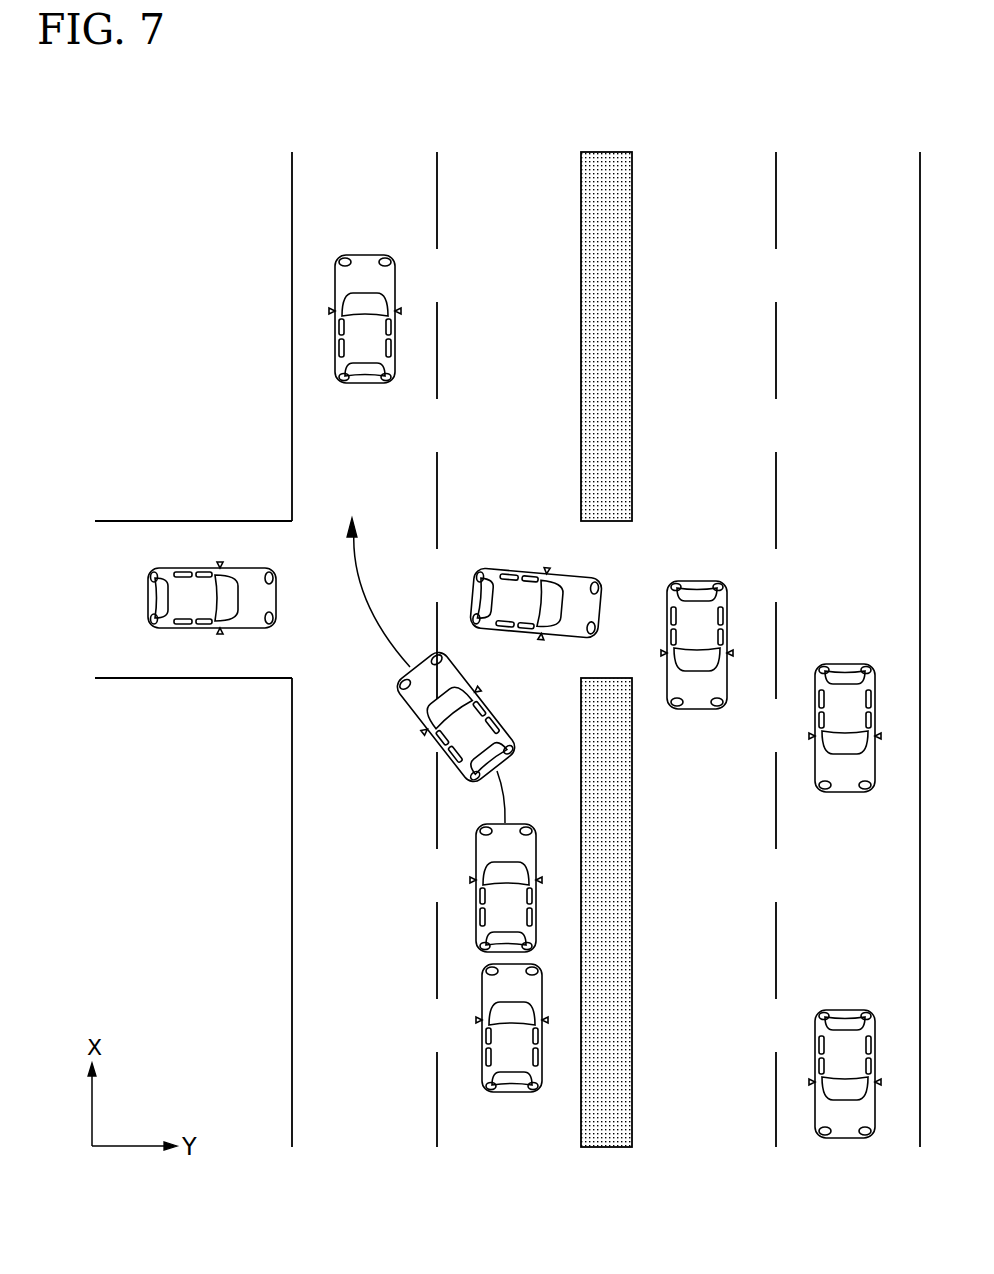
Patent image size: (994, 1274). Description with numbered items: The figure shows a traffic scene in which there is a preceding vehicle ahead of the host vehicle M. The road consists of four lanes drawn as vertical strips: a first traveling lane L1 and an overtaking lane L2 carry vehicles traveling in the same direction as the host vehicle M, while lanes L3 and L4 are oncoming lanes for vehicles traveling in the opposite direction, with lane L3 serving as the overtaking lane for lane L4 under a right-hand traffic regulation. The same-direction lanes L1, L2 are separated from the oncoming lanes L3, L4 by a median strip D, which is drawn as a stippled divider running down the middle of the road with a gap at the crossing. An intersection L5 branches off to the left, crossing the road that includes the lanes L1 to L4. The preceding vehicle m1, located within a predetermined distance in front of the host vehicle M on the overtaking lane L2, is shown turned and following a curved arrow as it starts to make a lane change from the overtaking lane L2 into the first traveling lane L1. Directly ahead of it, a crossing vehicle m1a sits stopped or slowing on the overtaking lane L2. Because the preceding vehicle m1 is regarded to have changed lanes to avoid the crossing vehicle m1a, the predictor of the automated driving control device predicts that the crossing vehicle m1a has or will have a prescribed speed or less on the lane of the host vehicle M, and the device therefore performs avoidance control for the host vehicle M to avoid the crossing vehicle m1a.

The first traveling lane L1 is at (433, 142).
The overtaking lane L2 is at (578, 142).
The oncoming lane L3 is at (775, 142).
The oncoming lane L4 is at (920, 142).
The intersection L5 is at (90, 521).
The median strip D is at (606, 165).
The preceding vehicle m1 is at (412, 714).
The crossing vehicle m1a is at (488, 568).
The host vehicle M is at (508, 1093).